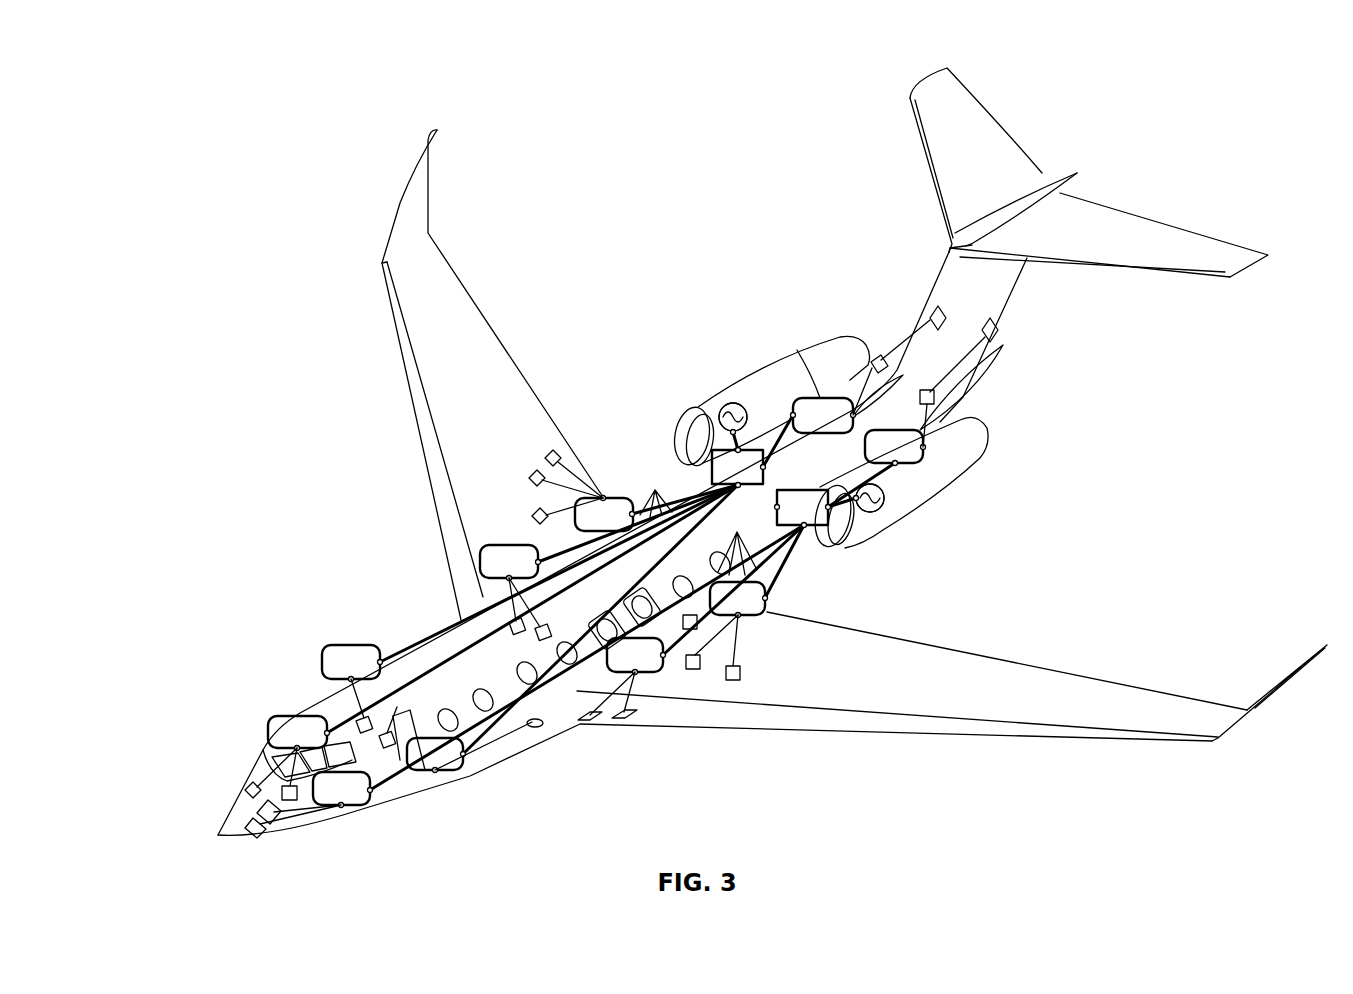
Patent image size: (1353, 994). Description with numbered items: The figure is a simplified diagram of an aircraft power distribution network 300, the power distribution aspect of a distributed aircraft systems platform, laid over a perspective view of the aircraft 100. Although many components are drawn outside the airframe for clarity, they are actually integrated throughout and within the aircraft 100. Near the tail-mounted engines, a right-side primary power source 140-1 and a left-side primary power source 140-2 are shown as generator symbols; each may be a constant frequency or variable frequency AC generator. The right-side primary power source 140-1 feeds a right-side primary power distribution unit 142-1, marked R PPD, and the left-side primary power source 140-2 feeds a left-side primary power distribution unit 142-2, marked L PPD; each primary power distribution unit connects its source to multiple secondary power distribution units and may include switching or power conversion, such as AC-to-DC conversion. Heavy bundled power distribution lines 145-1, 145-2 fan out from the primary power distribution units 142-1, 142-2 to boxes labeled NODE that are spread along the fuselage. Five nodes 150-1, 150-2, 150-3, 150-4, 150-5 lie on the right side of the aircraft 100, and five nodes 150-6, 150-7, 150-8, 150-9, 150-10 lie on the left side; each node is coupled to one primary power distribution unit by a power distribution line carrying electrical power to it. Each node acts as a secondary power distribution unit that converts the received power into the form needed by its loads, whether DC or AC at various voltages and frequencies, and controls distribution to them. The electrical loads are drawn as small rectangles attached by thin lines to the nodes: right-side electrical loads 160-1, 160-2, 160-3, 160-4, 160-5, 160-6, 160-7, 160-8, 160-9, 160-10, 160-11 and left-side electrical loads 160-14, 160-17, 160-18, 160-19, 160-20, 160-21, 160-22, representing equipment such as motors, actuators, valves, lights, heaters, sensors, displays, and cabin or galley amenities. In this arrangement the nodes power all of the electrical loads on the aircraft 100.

The aircraft 100 is at (338, 176).
The aircraft power distribution network 300 is at (325, 516).
The right-side primary power source 140-1 is at (723, 400).
The left-side primary power source 140-2 is at (885, 505).
The right-side primary power distribution unit 142-1 is at (744, 435).
The left-side primary power distribution unit 142-2 is at (860, 520).
The power distribution line 145-1 is at (712, 462).
The power distribution line 145-2 is at (845, 478).
The node 150-1 is at (800, 398).
The node 150-2 is at (607, 498).
The node 150-3 is at (498, 545).
The node 150-4 is at (322, 655).
The node 150-5 is at (268, 727).
The node 150-6 is at (355, 806).
The node 150-7 is at (450, 772).
The node 150-8 is at (670, 665).
The node 150-9 is at (768, 602).
The node 150-10 is at (923, 450).
The electrical load 160-1 is at (870, 360).
The electrical load 160-2 is at (935, 312).
The electrical load 160-3 is at (562, 452).
The electrical load 160-4 is at (530, 512).
The electrical load 160-5 is at (530, 472).
The electrical load 160-6 is at (552, 622).
The electrical load 160-7 is at (502, 620).
The electrical load 160-8 is at (400, 763).
The electrical load 160-9 is at (357, 720).
The electrical load 160-10 is at (292, 801).
The electrical load 160-11 is at (248, 788).
The electrical load 160-14 is at (520, 722).
The electrical load 160-17 is at (585, 722).
The electrical load 160-18 is at (668, 593).
The electrical load 160-19 is at (740, 677).
The electrical load 160-20 is at (700, 662).
The electrical load 160-21 is at (960, 352).
The electrical load 160-22 is at (996, 332).